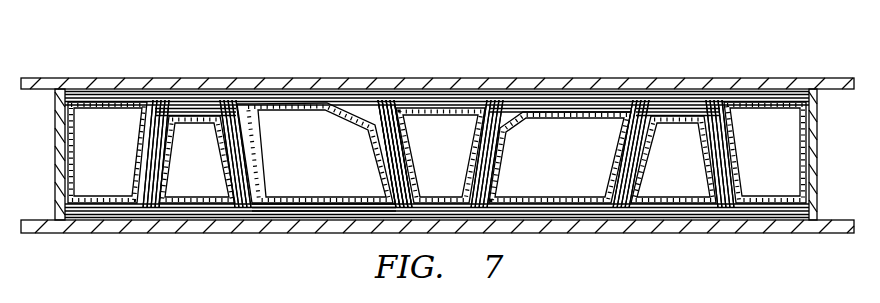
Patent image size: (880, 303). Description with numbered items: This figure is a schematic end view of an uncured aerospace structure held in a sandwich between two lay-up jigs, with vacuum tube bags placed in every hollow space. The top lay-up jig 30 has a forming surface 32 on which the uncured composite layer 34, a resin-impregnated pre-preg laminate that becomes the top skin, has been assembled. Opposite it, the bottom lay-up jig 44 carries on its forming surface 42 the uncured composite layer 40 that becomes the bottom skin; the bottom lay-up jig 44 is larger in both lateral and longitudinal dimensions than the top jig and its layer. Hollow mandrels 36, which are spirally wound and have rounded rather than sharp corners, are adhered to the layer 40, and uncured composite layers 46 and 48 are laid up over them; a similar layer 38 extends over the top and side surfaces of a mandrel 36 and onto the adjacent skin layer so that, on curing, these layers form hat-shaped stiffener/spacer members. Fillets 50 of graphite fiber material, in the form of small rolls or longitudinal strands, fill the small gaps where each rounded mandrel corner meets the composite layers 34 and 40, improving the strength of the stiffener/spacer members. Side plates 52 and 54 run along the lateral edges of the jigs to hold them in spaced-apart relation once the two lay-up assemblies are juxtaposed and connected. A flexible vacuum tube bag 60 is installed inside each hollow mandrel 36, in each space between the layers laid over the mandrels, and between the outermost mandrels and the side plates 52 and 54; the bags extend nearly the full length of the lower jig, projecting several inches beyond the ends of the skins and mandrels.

The top lay-up jig 30 is at (757, 78).
The forming surface 32 is at (585, 92).
The uncured composite layer 34 is at (291, 100).
The hollow mandrel 36 is at (178, 151).
The layer 38 is at (377, 160).
The uncured composite layer 40 is at (527, 215).
The forming surface 42 is at (343, 210).
The bottom lay-up jig 44 is at (322, 238).
The uncured composite layer 46 is at (147, 133).
The uncured composite layer 48 is at (747, 128).
The fillets 50 is at (387, 101).
The side plate 52 is at (822, 160).
The side plate 54 is at (50, 150).
The vacuum tube bag 60 is at (78, 156).